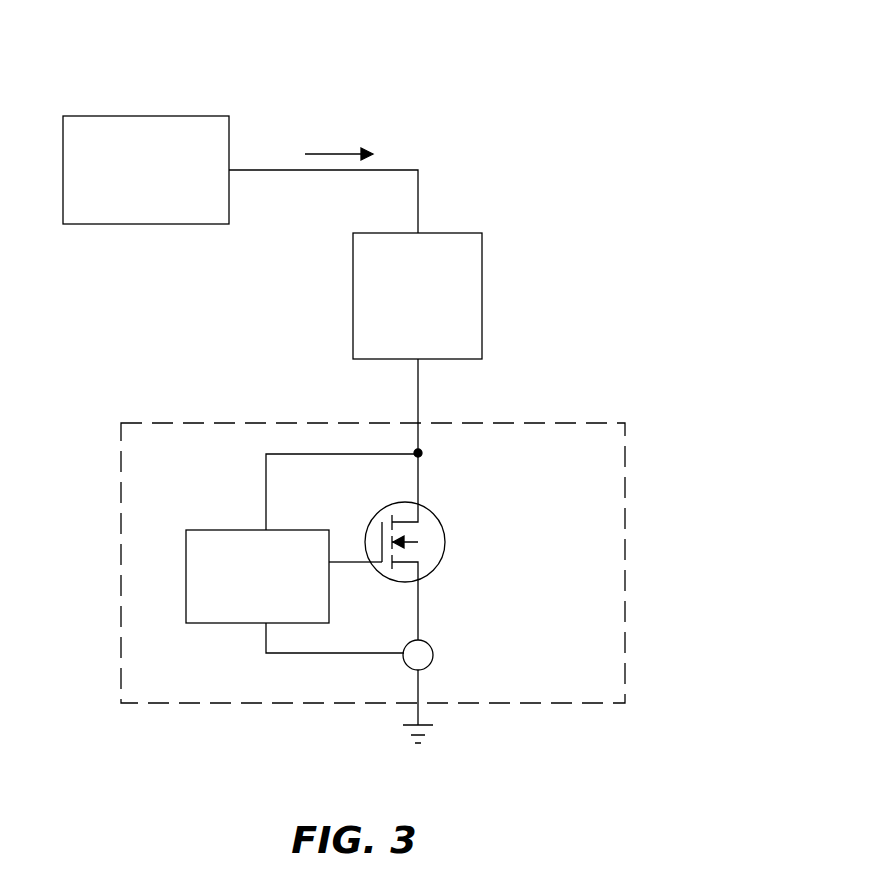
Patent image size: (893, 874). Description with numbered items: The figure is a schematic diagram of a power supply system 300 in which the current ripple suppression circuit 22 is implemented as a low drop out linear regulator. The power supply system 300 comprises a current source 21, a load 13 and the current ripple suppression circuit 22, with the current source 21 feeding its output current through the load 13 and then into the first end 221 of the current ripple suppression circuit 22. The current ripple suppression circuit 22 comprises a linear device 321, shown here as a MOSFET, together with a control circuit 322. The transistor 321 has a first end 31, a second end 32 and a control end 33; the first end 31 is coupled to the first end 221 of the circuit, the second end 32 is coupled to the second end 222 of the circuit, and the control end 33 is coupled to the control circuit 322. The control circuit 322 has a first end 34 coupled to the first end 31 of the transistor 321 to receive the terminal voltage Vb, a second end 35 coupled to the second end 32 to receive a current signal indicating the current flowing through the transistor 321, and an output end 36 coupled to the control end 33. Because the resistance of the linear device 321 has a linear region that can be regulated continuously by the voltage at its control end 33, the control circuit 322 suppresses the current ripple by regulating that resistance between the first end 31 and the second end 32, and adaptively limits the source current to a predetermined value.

The power supply system 300 is at (615, 113).
The current source 21 is at (229, 131).
The load 13 is at (482, 266).
The first end of current ripple suppression circuit 221 is at (416, 422).
The current ripple suppression circuit 22 is at (625, 423).
The control circuit 322 is at (186, 530).
The first end of control circuit 34 is at (262, 530).
The second end of control circuit 35 is at (263, 625).
The output end of control circuit 36 is at (334, 560).
The linear device 321 is at (430, 546).
The first end of transistor 31 is at (426, 506).
The second end of transistor 32 is at (420, 580).
The control end of transistor 33 is at (360, 566).
The second end of current ripple suppression circuit 222 is at (412, 703).